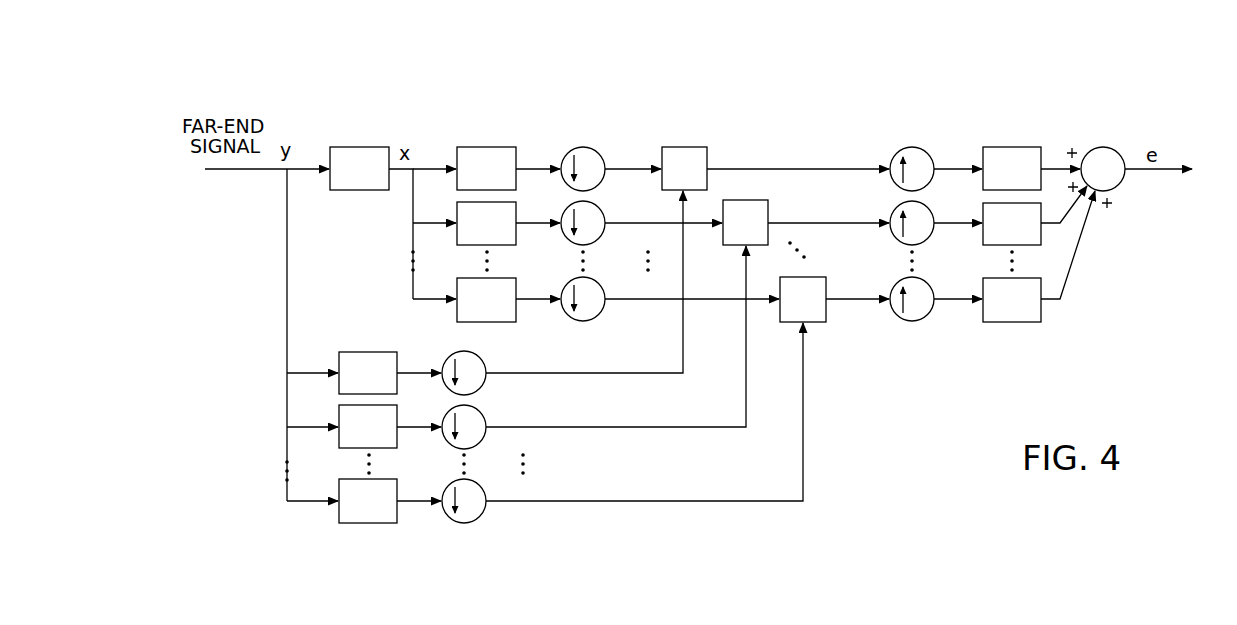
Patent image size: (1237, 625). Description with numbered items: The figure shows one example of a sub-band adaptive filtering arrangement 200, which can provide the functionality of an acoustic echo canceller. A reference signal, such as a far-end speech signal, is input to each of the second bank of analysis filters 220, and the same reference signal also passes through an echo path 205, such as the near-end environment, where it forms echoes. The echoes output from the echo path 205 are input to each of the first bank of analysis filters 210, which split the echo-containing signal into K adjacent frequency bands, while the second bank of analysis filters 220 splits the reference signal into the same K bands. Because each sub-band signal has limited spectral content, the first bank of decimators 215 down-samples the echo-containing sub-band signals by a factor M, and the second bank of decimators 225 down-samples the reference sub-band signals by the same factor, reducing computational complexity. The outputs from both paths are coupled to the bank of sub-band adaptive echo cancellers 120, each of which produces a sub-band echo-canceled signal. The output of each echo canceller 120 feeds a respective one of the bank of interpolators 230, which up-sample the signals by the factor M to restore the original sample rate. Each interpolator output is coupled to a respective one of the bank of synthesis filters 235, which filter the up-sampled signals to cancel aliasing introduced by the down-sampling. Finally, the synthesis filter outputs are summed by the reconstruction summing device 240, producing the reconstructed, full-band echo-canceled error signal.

The sub-band adaptive filtering arrangement 200 is at (906, 419).
The echo path 205 is at (357, 147).
The first bank of analysis filters 210 is at (482, 147).
The first bank of decimators 215 is at (578, 147).
The sub-band adaptive echo canceller 120 is at (685, 147).
The second bank of analysis filters 220 is at (367, 352).
The second bank of decimators 225 is at (479, 357).
The bank of interpolators 230 is at (908, 147).
The bank of synthesis filters 235 is at (1010, 147).
The reconstruction summing device 240 is at (1109, 147).